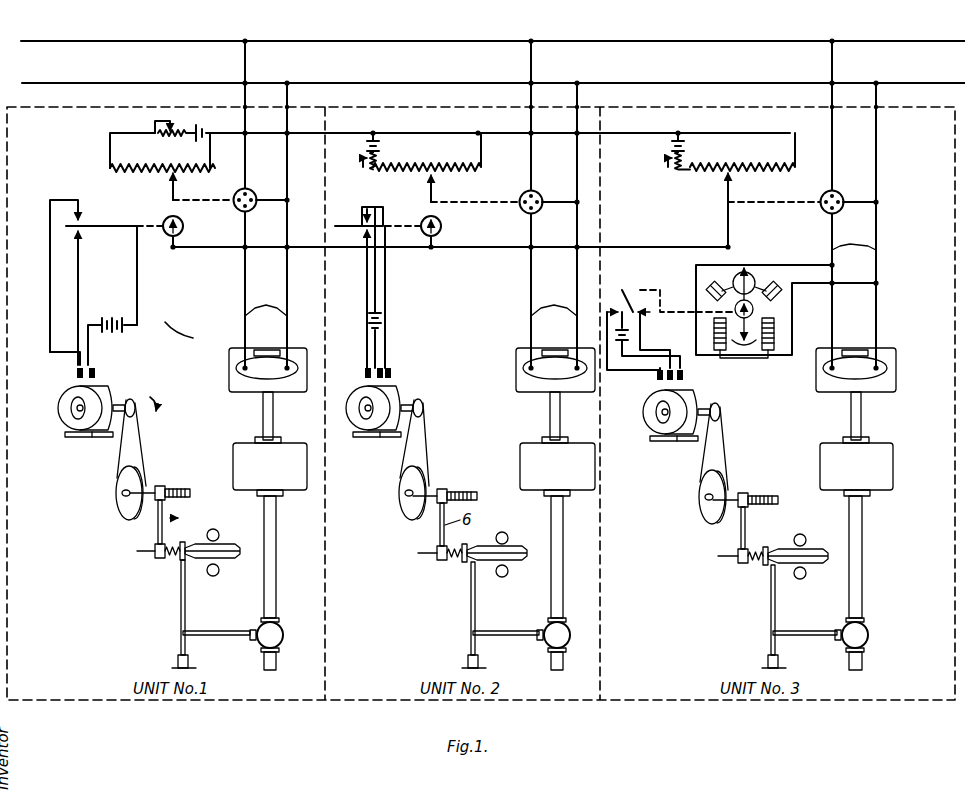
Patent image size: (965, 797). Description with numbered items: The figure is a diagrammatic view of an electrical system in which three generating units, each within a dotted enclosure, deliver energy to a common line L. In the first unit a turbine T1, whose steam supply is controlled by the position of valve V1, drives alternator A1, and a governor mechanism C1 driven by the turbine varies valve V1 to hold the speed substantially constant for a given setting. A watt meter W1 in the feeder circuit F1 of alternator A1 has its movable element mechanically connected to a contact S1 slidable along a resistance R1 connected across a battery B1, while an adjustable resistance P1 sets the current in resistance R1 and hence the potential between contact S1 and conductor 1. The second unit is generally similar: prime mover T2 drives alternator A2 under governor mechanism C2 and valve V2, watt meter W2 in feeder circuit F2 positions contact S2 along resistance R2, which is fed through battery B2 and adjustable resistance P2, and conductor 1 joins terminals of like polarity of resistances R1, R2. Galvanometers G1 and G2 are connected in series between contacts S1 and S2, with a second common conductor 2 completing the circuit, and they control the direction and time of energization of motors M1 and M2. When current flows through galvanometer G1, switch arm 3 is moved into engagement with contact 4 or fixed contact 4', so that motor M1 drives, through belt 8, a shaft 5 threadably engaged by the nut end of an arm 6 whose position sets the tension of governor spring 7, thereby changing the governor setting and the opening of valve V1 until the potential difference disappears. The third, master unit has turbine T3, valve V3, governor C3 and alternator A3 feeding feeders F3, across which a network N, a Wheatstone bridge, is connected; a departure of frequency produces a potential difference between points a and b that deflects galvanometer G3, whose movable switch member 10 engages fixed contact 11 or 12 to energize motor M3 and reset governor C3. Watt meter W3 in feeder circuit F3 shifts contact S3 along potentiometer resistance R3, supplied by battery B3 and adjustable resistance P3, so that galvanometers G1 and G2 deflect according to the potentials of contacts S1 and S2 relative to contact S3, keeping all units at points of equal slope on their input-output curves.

The line L is at (493, 62).
The conductor 1 is at (212, 140).
The circuit wire 2 is at (210, 249).
The switch arm 3 is at (97, 224).
The fixed contact 4 is at (71, 264).
The fixed contact 4' is at (92, 298).
The shaft 5 is at (185, 486).
The arm 6 is at (155, 549).
The governor spring 7 is at (175, 560).
The belt 8 is at (117, 470).
The movable switch member 10 is at (640, 305).
The fixed contact 11 is at (612, 306).
The fixed contact 12 is at (646, 318).
The point a is at (745, 270).
The point b is at (752, 358).
The network N is at (776, 368).
The battery B1 is at (214, 122).
The battery B2 is at (378, 146).
The battery B3 is at (672, 146).
The resistance P1 is at (290, 545).
The adjustable resistance P2 is at (362, 158).
The potentiometer / pipe P3 is at (668, 170).
The resistance R1 is at (158, 171).
The resistance R2 is at (408, 172).
The potentiometer resistance R3 is at (708, 172).
The contact S1 is at (176, 180).
The contact S2 is at (436, 180).
The contact S3 is at (733, 178).
The watt meter W1 is at (250, 192).
The watt meter W2 is at (537, 193).
The watt meter W3 is at (838, 193).
The galvanometer G1 is at (183, 226).
The galvanometer G2 is at (441, 226).
The galvanometer G3 is at (752, 305).
The feeder circuit F1 is at (266, 300).
The feeder circuit F2 is at (554, 300).
The feeders F3 is at (854, 238).
The alternator A1 is at (268, 370).
The alternator A2 is at (555, 370).
The alternator A3 is at (856, 370).
The turbine T1 is at (270, 444).
The prime mover T2 is at (557, 444).
The turbine T3 is at (856, 444).
The motor M1 is at (70, 418).
The motor M2 is at (359, 424).
The motor M3 is at (656, 434).
The governor mechanism C1 is at (213, 546).
The governor mechanism C2 is at (498, 546).
The governor C3 is at (798, 548).
The valve V1 is at (283, 630).
The valve V2 is at (569, 630).
The valve V3 is at (867, 630).